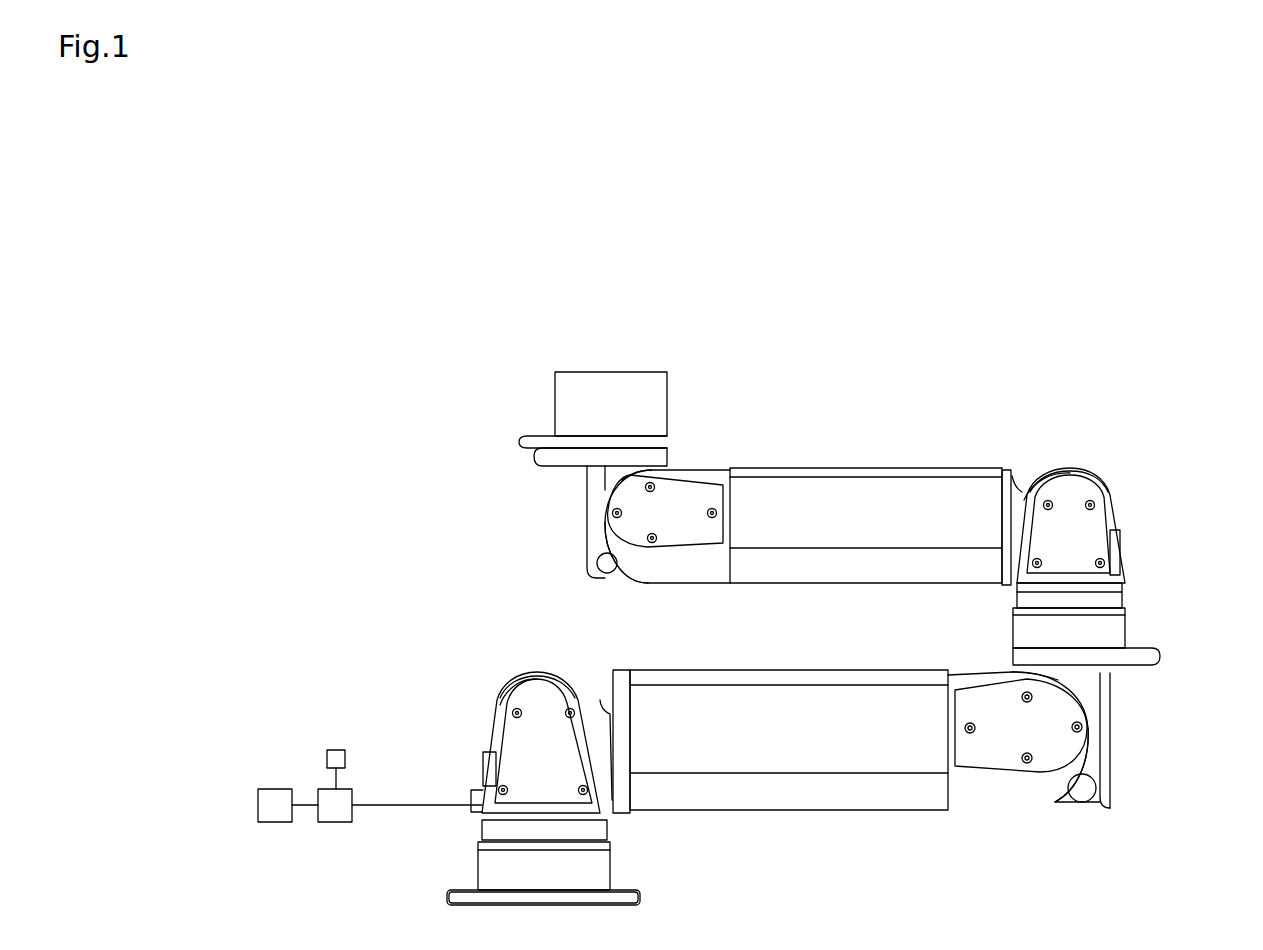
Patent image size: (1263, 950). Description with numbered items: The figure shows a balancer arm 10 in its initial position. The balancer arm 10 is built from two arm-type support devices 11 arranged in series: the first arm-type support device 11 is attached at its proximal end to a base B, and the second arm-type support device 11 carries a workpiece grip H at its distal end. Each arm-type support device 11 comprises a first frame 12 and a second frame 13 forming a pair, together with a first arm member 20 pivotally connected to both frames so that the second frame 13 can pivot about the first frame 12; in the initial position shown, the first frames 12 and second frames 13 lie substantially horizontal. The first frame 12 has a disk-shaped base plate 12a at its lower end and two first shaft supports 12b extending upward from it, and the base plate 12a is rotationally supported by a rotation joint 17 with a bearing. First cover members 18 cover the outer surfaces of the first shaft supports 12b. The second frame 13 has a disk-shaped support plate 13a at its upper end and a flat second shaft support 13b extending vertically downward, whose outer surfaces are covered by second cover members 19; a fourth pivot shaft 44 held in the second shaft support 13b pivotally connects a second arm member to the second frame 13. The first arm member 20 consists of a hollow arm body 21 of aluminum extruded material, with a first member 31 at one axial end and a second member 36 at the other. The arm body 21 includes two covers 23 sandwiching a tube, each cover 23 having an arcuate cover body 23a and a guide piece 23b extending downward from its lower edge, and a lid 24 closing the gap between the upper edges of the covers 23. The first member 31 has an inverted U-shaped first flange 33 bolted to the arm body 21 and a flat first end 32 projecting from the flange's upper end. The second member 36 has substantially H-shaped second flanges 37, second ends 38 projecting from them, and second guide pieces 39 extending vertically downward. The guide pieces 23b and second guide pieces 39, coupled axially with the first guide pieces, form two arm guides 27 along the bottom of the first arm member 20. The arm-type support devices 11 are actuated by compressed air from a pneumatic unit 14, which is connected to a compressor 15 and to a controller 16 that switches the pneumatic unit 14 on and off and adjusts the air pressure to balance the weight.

The balancer arm 10 is at (1167, 462).
The arm-type support device 11 is at (956, 461).
The first frame 12 is at (1118, 510).
The base plate 12a is at (480, 813).
The first shaft support 12b is at (1094, 472).
The second frame 13 is at (588, 514).
The support plate 13a is at (533, 459).
The second shaft support 13b is at (592, 487).
The pneumatic unit 14 is at (346, 789).
The compressor 15 is at (270, 789).
The controller 16 is at (337, 750).
The rotation joint 17 is at (1125, 628).
The first cover member 18 is at (1120, 562).
The second cover member 19 is at (672, 540).
The first arm member 20 is at (797, 585).
The arm body 21 is at (812, 486).
The cover 23 is at (977, 626).
The cover body 23a is at (890, 540).
The guide piece 23b is at (946, 565).
The lid 24 is at (847, 476).
The arm guide 27 is at (750, 588).
The first member 31 is at (1020, 477).
The first end 32 is at (1064, 468).
The first flange 33 is at (1002, 520).
The second member 36 is at (722, 469).
The second flange 37 is at (725, 515).
The second end 38 is at (672, 469).
The second guide piece 39 is at (706, 584).
The fourth pivot shaft 44 is at (603, 565).
The base B is at (640, 899).
The workpiece grip H is at (667, 396).